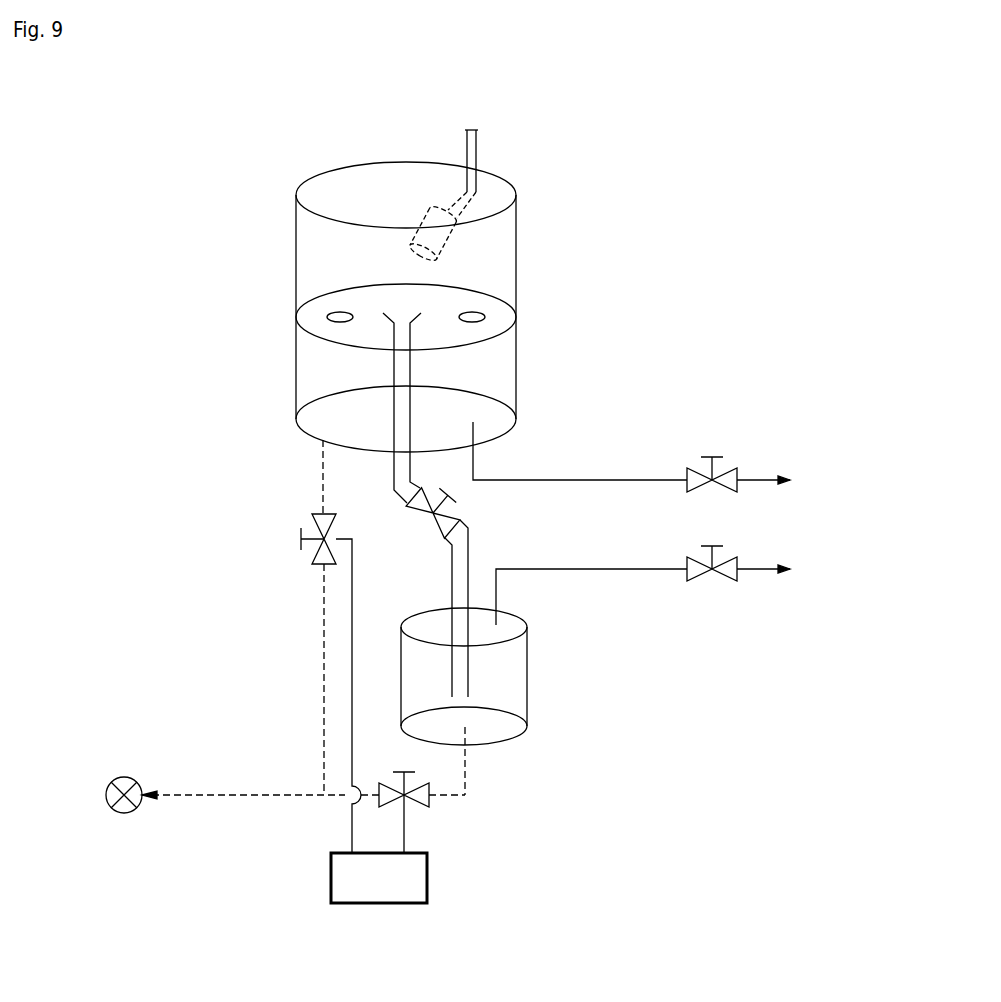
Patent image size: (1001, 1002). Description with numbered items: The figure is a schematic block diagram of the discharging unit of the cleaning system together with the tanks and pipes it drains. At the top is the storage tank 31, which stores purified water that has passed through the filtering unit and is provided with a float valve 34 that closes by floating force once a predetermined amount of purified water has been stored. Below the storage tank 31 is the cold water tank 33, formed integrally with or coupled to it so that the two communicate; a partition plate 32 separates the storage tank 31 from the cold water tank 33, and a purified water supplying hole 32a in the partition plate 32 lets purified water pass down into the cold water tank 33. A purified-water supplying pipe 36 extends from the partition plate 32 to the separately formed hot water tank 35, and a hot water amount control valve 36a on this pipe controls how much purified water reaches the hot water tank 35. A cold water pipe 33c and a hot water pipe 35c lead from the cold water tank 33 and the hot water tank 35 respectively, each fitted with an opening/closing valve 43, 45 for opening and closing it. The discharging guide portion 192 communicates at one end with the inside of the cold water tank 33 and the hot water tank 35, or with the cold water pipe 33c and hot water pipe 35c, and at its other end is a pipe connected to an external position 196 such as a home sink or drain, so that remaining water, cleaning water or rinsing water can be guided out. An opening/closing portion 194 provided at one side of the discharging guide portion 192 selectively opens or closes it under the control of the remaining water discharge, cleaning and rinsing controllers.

The storage tank 31 is at (502, 243).
The partition plate 32 is at (498, 318).
The purified water supplying hole 32a is at (482, 312).
The cold water tank 33 is at (503, 374).
The cold water pipe 33c is at (634, 480).
The float valve 34 is at (428, 215).
The hot water tank 35 is at (518, 683).
The hot water pipe 35c is at (634, 577).
The purified-water supplying pipe 36 is at (397, 412).
The hot water amount control valve 36a is at (428, 535).
The opening/closing valve 43 is at (717, 477).
The opening/closing valve 45 is at (723, 577).
The discharging guide portion 192 is at (321, 726).
The opening/closing portion 194 is at (313, 551).
The external position 196 is at (123, 777).